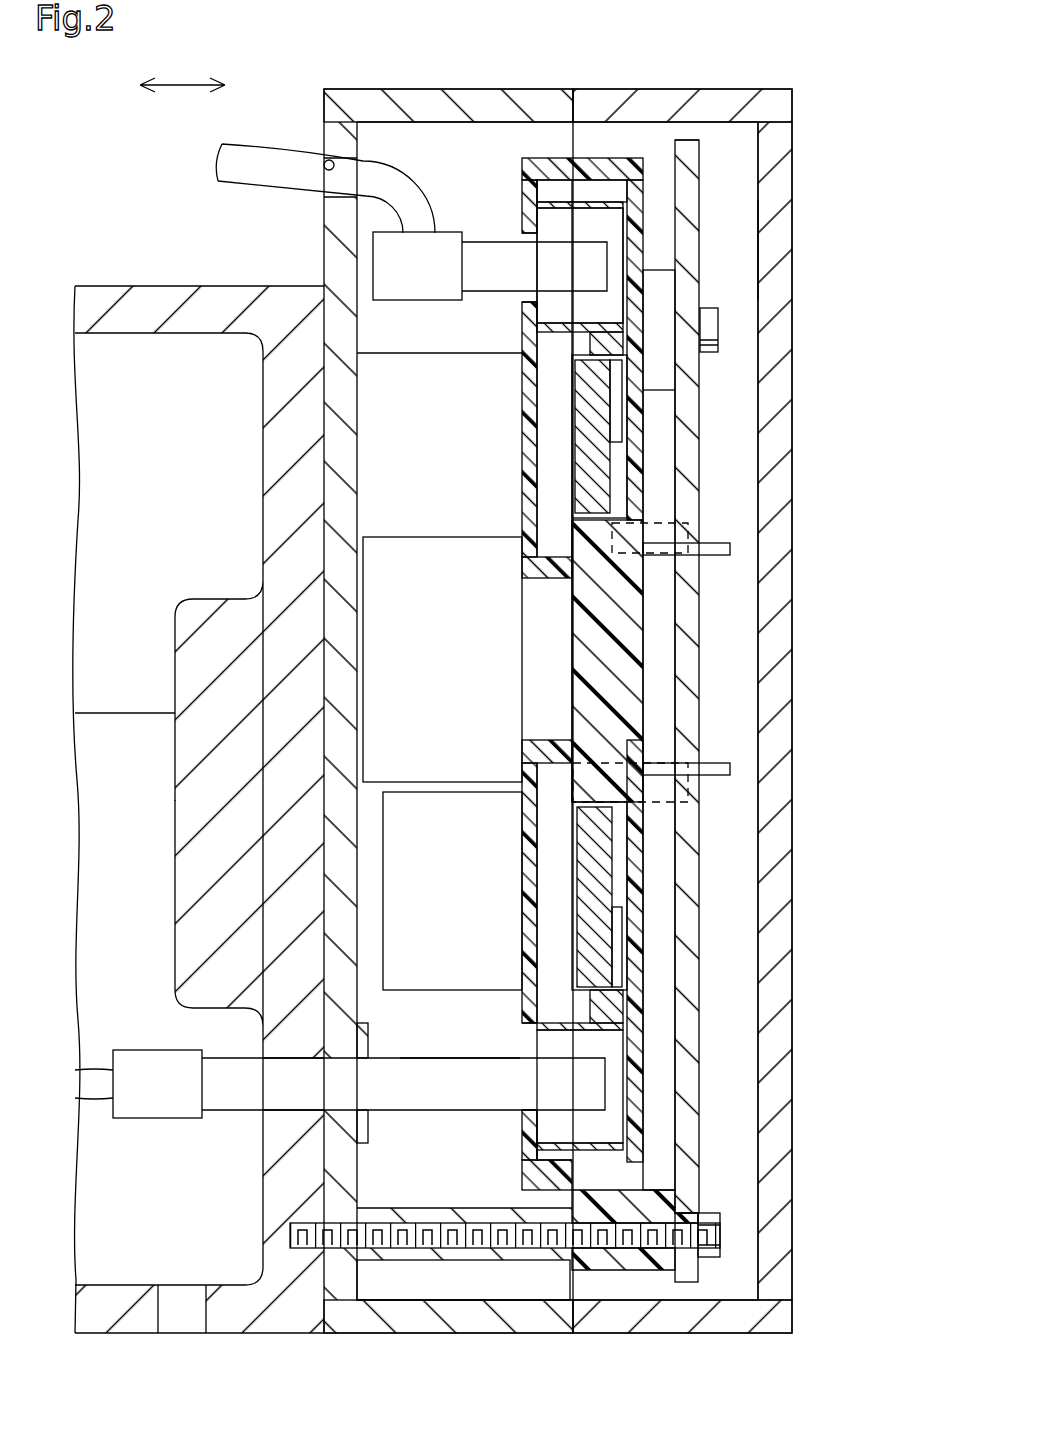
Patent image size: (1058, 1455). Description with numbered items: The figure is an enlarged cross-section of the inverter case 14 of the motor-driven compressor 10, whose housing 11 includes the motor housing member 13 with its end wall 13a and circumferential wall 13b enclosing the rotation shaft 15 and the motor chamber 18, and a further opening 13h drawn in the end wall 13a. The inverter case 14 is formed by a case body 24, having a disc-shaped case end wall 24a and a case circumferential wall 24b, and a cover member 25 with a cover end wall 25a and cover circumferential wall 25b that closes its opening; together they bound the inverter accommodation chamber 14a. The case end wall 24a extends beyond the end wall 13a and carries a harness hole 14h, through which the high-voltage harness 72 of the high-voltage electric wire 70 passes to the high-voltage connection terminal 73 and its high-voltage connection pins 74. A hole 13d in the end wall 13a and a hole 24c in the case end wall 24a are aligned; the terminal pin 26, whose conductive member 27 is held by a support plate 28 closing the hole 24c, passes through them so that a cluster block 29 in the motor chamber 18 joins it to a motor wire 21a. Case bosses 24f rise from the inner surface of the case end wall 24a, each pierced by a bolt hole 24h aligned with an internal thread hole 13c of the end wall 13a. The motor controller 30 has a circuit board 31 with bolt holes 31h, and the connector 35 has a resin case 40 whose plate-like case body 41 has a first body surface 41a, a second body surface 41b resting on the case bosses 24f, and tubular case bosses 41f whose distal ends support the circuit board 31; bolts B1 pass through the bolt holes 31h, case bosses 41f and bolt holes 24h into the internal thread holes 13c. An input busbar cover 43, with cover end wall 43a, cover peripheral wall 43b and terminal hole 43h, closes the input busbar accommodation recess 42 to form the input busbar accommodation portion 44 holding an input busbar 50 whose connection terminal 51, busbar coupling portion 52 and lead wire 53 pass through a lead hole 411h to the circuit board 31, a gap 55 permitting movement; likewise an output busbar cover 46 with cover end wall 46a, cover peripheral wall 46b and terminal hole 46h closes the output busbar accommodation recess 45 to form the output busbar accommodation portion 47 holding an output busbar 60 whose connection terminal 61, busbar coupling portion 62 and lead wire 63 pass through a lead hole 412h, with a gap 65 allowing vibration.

The motor-driven compressor 10 is at (72, 205).
The housing 11 is at (110, 286).
The motor housing member 13 is at (160, 286).
The end wall 13a is at (263, 398).
The circumferential wall 13b is at (220, 290).
The internal thread hole 13c is at (290, 1232).
The hole 13d is at (270, 1112).
The slot 13h is at (165, 1300).
The inverter case 14 is at (708, 89).
The inverter accommodation chamber 14a is at (740, 247).
The harness hole 14h is at (325, 165).
The rotation shaft 15 is at (112, 895).
The motor chamber 18 is at (138, 1003).
The motor wire 21a is at (100, 1098).
The case body 24 is at (486, 1333).
The case end wall 24a is at (330, 570).
The case circumferential wall 24b is at (440, 1333).
The hole 24c is at (352, 1099).
The case boss 24f is at (390, 353).
The bolt hole 24h is at (470, 1248).
The cover member 25 is at (656, 1333).
The cover end wall 25a is at (785, 688).
The cover circumferential wall 25b is at (700, 1333).
The terminal pin 26 is at (412, 1052).
The conductive member 27 is at (502, 1058).
The support plate 28 is at (368, 1048).
The cluster block 29 is at (168, 1118).
The motor controller 30 is at (720, 145).
The circuit board 31 is at (692, 183).
The bolt hole 31h is at (708, 1225).
The connector 35 is at (510, 188).
The case 40 is at (640, 680).
The case body 41 is at (573, 650).
The first body surface 41a is at (680, 625).
The second body surface 41b is at (572, 683).
The case boss 41f is at (670, 358).
The lead hole 411h is at (692, 553).
The lead hole 412h is at (692, 763).
The input busbar accommodation recess 42 is at (580, 185).
The input busbar cover 43 is at (522, 495).
The cover end wall 43a is at (522, 380).
The cover peripheral wall 43b is at (540, 160).
The terminal hole 43h is at (522, 238).
The input busbar accommodation portion 44 is at (550, 438).
The output busbar accommodation recess 45 is at (610, 1195).
The output busbar cover 46 is at (522, 845).
The cover end wall 46a is at (522, 883).
The cover peripheral wall 46b is at (555, 1190).
The terminal hole 46h is at (522, 1105).
The output busbar accommodation portion 47 is at (550, 900).
The input busbar 50 is at (605, 205).
The connection terminal 51 is at (558, 332).
The busbar coupling portion 52 is at (620, 418).
The lead wire 53 is at (720, 543).
The gap 55 is at (640, 232).
The output busbar 60 is at (540, 1157).
The connection terminal 61 is at (565, 1023).
The busbar coupling portion 62 is at (620, 940).
The lead wire 63 is at (716, 775).
The gap 65 is at (630, 1035).
The high-voltage electric wire 70 is at (258, 212).
The high-voltage harness 72 is at (298, 192).
The high-voltage connection terminal 73 is at (408, 300).
The high-voltage connection pin 74 is at (490, 292).
The bolt B1 is at (708, 308).